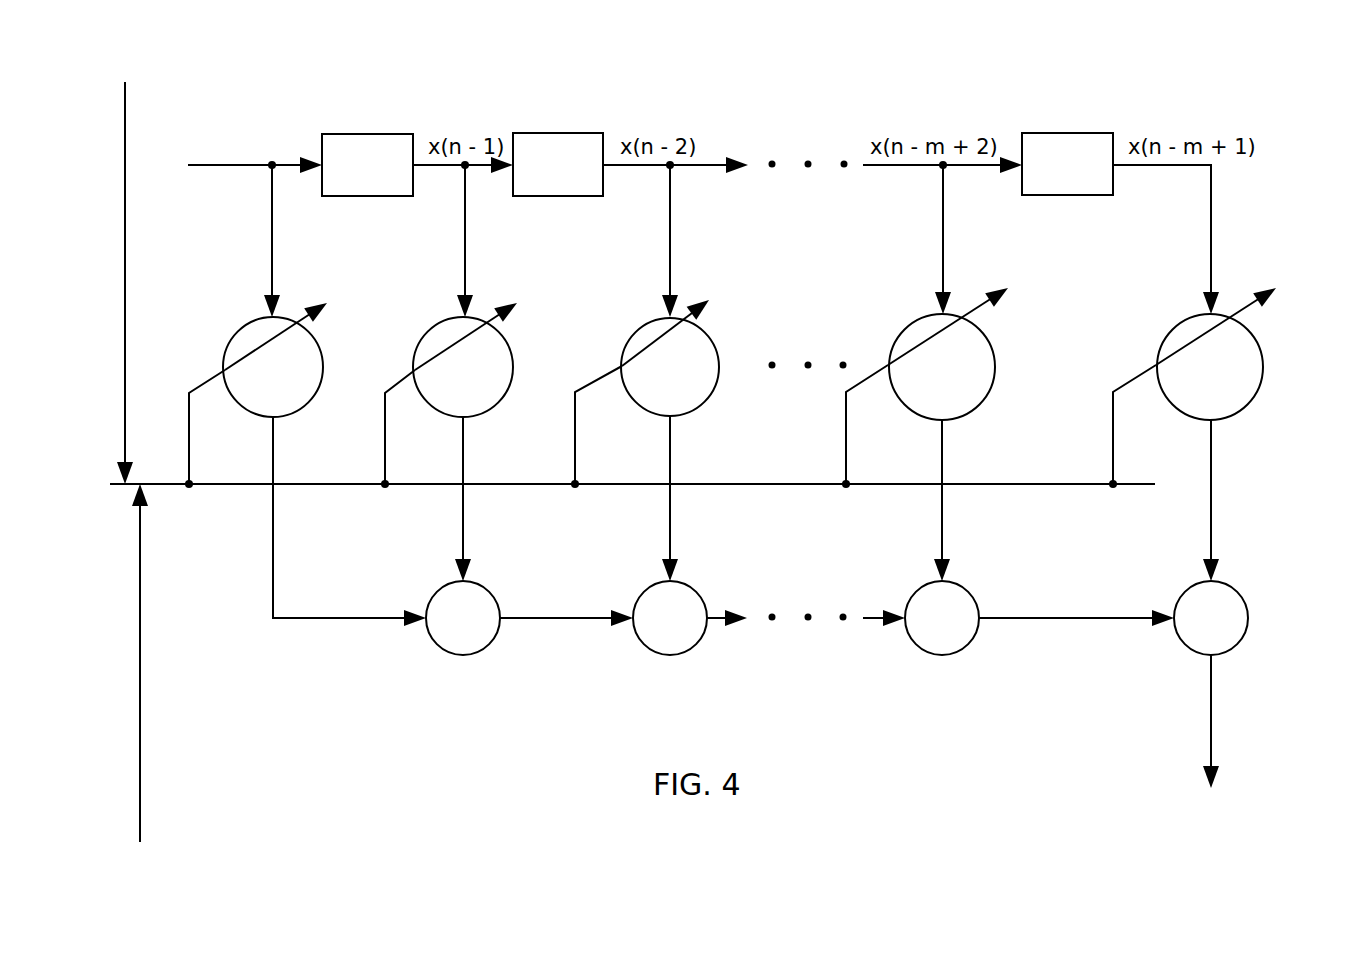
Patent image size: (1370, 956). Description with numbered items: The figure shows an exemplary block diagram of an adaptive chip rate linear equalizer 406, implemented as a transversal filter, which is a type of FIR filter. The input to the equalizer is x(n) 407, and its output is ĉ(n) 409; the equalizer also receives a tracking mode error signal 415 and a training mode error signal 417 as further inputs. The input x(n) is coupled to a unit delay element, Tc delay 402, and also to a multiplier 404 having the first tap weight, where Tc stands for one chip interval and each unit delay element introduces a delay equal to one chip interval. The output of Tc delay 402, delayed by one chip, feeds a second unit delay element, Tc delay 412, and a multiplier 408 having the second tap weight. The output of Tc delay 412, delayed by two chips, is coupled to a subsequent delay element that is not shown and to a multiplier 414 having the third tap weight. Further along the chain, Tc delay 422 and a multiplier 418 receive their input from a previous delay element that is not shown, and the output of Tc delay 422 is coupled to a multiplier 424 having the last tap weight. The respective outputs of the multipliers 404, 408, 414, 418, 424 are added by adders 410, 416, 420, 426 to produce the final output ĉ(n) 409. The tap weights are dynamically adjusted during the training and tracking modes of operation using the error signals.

The Tc delay unit delay element 402 is at (340, 134).
The multiplier 404 is at (240, 328).
The adaptive chip rate linear equalizer 406 is at (1278, 97).
The input x(n) 407 is at (235, 163).
The multiplier 408 is at (431, 328).
The output ĉ(n) 409 is at (1211, 706).
The adder 410 is at (489, 590).
The Tc delay unit delay element 412 is at (532, 133).
The multiplier 414 is at (640, 327).
The tracking mode error signal 415 is at (140, 698).
The adder 416 is at (696, 590).
The training mode error signal 417 is at (125, 208).
The multiplier 418 is at (905, 328).
The adder 420 is at (968, 590).
The Tc delay unit delay element 422 is at (1036, 133).
The multiplier 424 is at (1173, 328).
The adder 426 is at (1238, 590).